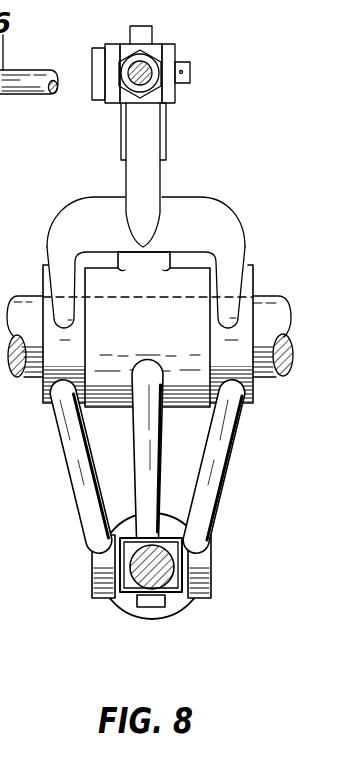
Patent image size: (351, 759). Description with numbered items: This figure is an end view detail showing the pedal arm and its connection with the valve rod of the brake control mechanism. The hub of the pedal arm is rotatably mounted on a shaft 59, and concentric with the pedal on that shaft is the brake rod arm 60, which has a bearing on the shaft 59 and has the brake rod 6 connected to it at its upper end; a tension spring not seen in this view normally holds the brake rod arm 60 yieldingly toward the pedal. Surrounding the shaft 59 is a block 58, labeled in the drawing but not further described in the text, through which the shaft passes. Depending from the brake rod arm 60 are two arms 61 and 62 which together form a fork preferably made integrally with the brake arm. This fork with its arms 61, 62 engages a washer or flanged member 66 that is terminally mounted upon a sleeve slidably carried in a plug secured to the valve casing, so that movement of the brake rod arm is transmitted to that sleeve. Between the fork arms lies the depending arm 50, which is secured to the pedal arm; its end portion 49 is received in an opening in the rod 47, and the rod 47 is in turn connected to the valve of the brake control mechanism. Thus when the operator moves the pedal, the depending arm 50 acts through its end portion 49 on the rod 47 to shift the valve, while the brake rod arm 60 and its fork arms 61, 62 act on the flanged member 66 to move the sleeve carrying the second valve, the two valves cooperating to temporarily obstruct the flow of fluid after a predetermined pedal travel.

The brake rod 6 is at (152, 72).
The brake rod arm 60 is at (147, 122).
The clamping block 58 is at (148, 329).
The shaft 59 is at (278, 318).
The depending arm 50 is at (150, 462).
The depending arm of fork 61 is at (85, 503).
The depending arm of fork 62 is at (213, 505).
The rod 47 is at (132, 593).
The washer or flanged member 66 is at (148, 612).
The end portion 49 is at (170, 608).